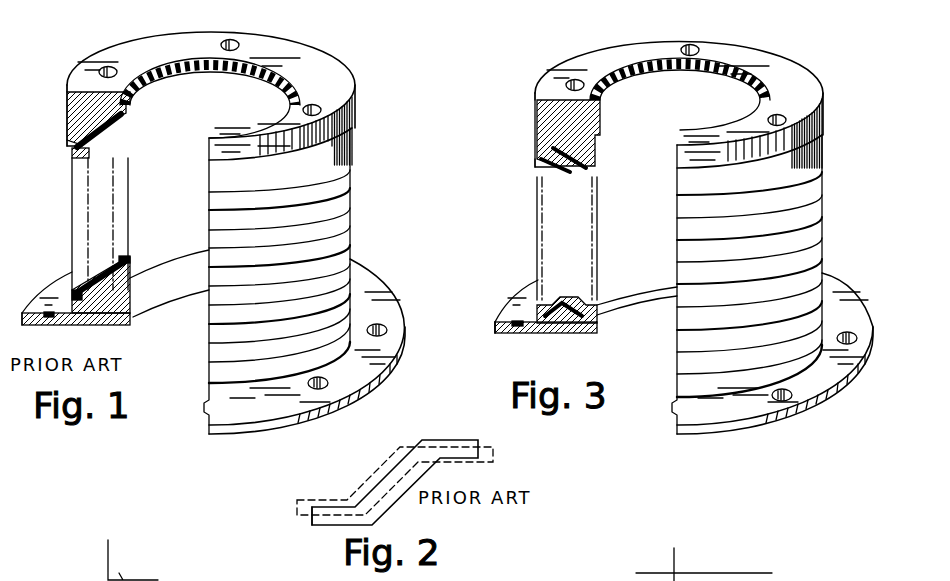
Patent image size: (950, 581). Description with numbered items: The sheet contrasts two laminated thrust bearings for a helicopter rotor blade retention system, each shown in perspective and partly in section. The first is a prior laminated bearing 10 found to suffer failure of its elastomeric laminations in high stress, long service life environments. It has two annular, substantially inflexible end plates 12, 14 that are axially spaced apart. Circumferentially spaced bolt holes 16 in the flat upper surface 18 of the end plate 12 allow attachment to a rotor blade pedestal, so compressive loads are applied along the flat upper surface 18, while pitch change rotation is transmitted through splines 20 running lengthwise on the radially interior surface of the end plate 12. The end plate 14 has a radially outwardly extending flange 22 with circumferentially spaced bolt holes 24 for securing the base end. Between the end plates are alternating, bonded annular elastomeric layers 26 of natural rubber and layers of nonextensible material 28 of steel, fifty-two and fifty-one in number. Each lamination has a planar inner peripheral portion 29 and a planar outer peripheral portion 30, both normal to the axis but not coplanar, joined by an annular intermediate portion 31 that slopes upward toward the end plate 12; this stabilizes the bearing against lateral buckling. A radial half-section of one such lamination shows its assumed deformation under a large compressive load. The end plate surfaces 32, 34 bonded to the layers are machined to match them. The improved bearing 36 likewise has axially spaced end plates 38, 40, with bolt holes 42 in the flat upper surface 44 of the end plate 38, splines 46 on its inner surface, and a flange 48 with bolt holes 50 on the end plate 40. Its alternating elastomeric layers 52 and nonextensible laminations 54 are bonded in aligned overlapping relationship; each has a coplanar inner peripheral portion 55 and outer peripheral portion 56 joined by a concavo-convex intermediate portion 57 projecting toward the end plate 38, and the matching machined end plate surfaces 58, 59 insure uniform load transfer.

In FIG. 1, the laminated bearing 10 is at (80, 42).
In FIG. 1, the end plate 12 is at (250, 217).
In FIG. 1, the end plate 14 is at (229, 296).
In FIG. 1, the bolt holes 16 is at (108, 66).
In FIG. 1, the flat upper surface 18 is at (284, 55).
In FIG. 1, the splines 20 is at (213, 72).
In FIG. 1, the flange 22 is at (378, 296).
In FIG. 1, the bolt holes 24 is at (387, 330).
In FIG. 1, the elastomeric layers 26 is at (72, 144).
In FIG. 1, the layers of nonextensible material 28 is at (75, 152).
In FIG. 1, the inner peripheral portion 29 is at (120, 262).
In FIG. 2, the inner peripheral portion 29 is at (436, 440).
In FIG. 1, the outer peripheral portion 30 is at (77, 290).
In FIG. 2, the outer peripheral portion 30 is at (334, 506).
In FIG. 1, the intermediate portion 31 is at (90, 290).
In FIG. 2, the intermediate portion 31 is at (404, 460).
In FIG. 1, the end plate surface 32 is at (90, 114).
In FIG. 1, the end plate surface 34 is at (127, 308).
In FIG. 3, the bearing 36 is at (547, 56).
In FIG. 3, the end plate 38 is at (716, 224).
In FIG. 3, the end plate 40 is at (691, 322).
In FIG. 3, the bolt holes 42 is at (690, 44).
In FIG. 3, the flat upper surface 44 is at (765, 75).
In FIG. 3, the splines 46 is at (668, 84).
In FIG. 3, the flange 48 is at (733, 420).
In FIG. 3, the bolt holes 50 is at (857, 340).
In FIG. 3, the elastomeric layers 52 is at (541, 164).
In FIG. 3, the nonextensible laminations 54 is at (538, 180).
In FIG. 3, the inner peripheral portion 55 is at (592, 298).
In FIG. 3, the outer peripheral portion 56 is at (546, 297).
In FIG. 3, the intermediate portion 57 is at (565, 298).
In FIG. 3, the end plate surface 58 is at (570, 147).
In FIG. 3, the end plate surface 59 is at (568, 333).